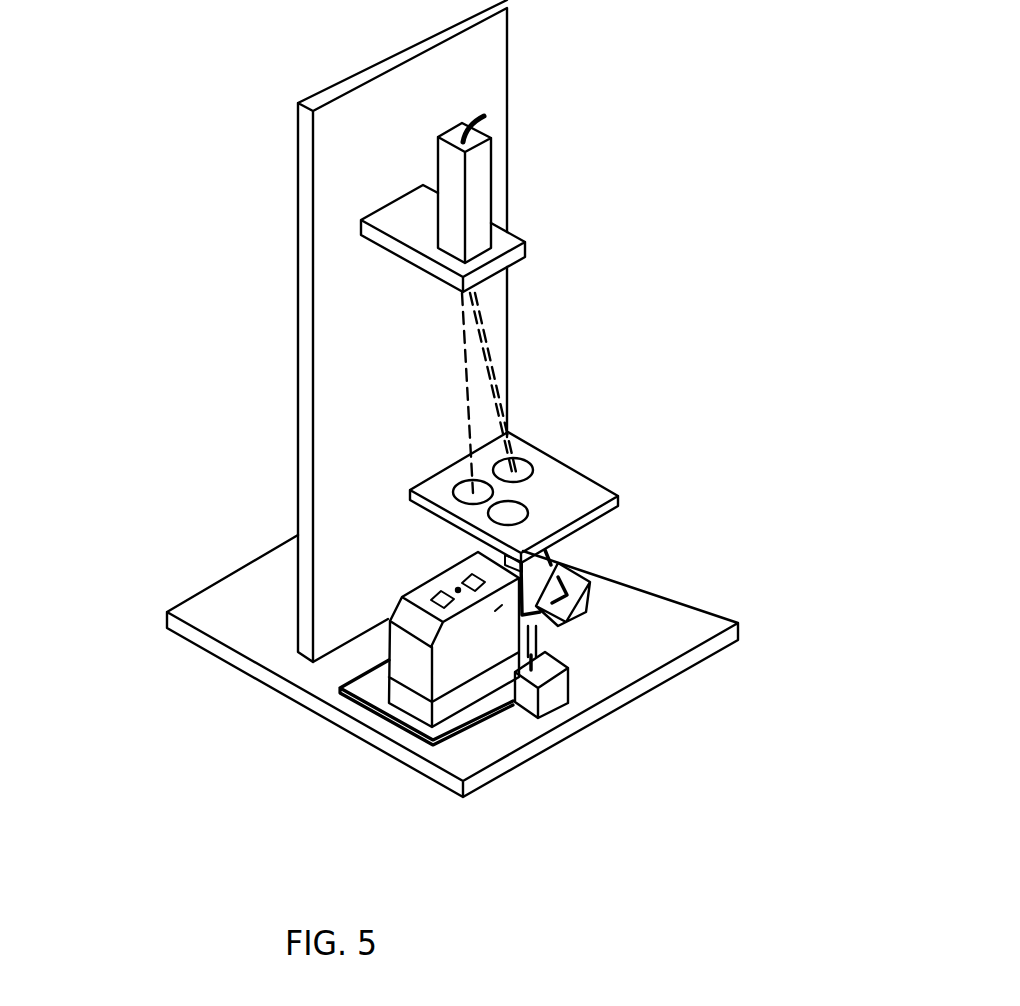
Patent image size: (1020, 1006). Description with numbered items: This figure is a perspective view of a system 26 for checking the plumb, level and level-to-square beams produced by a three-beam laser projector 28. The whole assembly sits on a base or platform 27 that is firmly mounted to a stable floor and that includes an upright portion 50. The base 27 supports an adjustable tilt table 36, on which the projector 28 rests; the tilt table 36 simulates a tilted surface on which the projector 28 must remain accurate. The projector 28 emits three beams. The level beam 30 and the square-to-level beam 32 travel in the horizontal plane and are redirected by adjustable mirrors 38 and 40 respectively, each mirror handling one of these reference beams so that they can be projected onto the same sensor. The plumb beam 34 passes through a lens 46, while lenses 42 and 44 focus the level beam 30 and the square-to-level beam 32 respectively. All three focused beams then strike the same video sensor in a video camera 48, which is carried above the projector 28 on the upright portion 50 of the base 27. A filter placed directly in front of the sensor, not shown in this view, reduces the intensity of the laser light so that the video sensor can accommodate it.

The system 26 is at (211, 95).
The base 27 is at (400, 766).
The projector 28 is at (362, 705).
The level beam 30 is at (558, 627).
The square-to-level beam 32 is at (502, 605).
The plumb beam 34 is at (473, 583).
The adjustable tilt table 36 is at (373, 710).
The adjustable mirror 38 is at (590, 580).
The adjustable mirror 40 is at (545, 704).
The lens 42 is at (525, 462).
The lens 44 is at (524, 506).
The lens 46 is at (459, 500).
The video camera 48 is at (491, 192).
The upright portion 50 is at (297, 357).